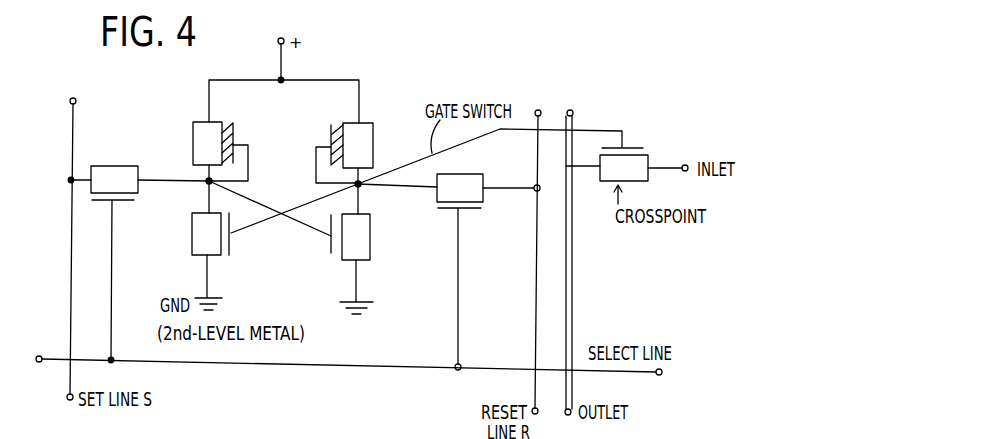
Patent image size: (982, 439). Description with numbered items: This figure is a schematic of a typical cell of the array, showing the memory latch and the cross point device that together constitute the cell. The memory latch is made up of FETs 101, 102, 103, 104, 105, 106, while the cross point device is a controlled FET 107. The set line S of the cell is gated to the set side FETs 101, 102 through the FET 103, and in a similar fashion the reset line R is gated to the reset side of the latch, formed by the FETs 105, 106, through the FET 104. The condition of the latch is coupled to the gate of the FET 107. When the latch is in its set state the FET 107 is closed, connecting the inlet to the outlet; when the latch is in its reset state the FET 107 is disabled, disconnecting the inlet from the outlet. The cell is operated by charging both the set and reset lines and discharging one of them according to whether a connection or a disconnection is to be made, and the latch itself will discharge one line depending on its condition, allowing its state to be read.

The set side FET 101 is at (193, 142).
The set side FET 102 is at (191, 232).
The FET 103 is at (135, 166).
The FET 104 is at (483, 173).
The reset side FET 105 is at (373, 140).
The reset side FET 106 is at (371, 241).
The controlled FET 107 is at (648, 158).